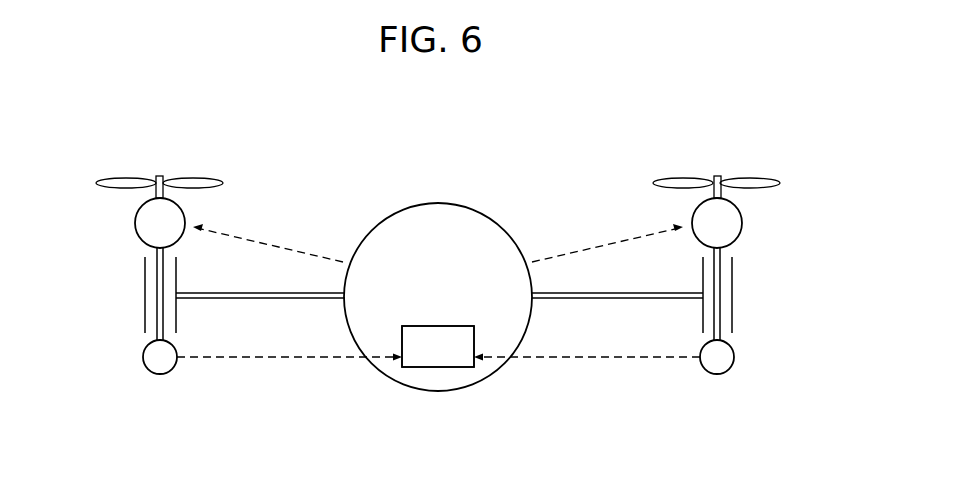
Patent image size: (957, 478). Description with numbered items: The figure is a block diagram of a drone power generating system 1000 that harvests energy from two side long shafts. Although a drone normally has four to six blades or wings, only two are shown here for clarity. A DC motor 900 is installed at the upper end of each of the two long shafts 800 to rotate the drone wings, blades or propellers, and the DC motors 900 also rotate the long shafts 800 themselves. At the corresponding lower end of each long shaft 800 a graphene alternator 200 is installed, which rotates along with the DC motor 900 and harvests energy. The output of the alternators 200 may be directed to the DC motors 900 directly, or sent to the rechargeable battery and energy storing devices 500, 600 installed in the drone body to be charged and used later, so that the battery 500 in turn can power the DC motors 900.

The unmanned aerial vehicle system 1000 is at (618, 137).
The DC motor 900 is at (135, 232).
The long shaft 800 is at (157, 293).
The alternator 200 is at (146, 362).
The rechargeable battery 500 is at (437, 360).
The energy storing device 600 is at (440, 388).